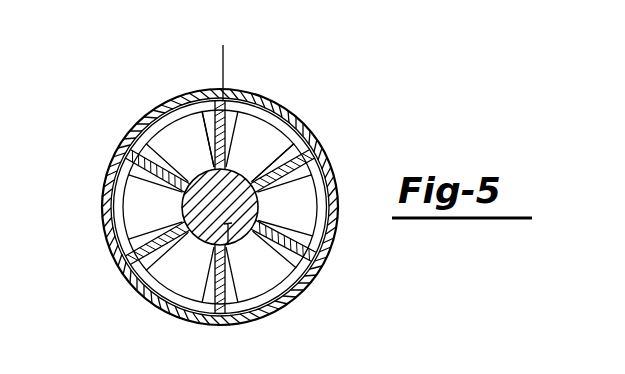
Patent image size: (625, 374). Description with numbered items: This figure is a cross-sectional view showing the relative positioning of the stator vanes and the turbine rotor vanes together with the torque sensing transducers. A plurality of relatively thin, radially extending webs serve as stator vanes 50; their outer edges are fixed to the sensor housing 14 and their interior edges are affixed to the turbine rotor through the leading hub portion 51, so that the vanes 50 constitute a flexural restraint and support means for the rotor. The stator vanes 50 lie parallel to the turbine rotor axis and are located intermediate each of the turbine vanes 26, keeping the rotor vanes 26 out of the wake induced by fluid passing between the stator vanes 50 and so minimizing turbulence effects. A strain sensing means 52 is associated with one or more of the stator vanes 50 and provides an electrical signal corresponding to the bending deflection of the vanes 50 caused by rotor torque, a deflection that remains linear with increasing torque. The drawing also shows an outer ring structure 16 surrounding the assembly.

The sensor housing 14 is at (140, 127).
The outer rim ring 16 is at (171, 103).
The turbine vanes 26 is at (278, 278).
The stator vanes 50 is at (152, 258).
The leading hub portion 51 is at (207, 305).
The strain sensing means 52 is at (233, 147).